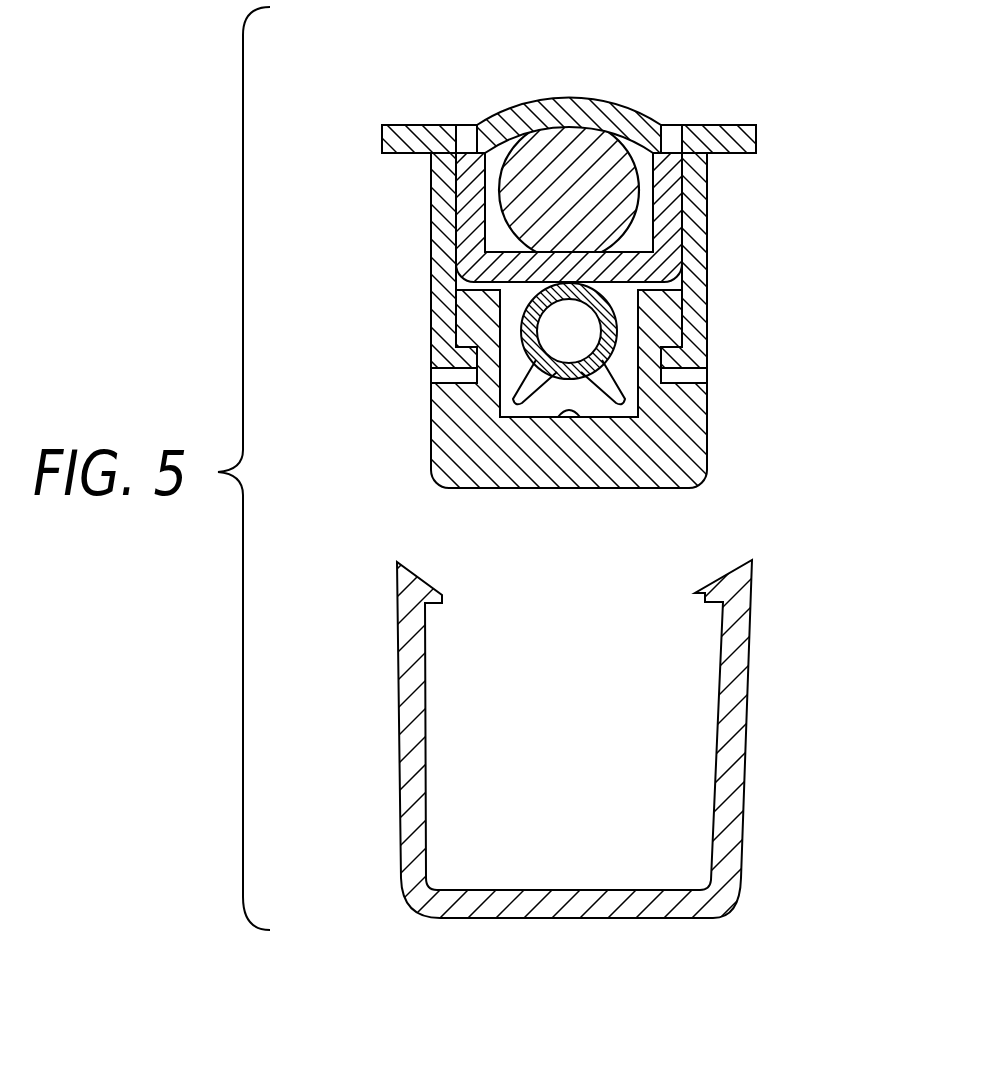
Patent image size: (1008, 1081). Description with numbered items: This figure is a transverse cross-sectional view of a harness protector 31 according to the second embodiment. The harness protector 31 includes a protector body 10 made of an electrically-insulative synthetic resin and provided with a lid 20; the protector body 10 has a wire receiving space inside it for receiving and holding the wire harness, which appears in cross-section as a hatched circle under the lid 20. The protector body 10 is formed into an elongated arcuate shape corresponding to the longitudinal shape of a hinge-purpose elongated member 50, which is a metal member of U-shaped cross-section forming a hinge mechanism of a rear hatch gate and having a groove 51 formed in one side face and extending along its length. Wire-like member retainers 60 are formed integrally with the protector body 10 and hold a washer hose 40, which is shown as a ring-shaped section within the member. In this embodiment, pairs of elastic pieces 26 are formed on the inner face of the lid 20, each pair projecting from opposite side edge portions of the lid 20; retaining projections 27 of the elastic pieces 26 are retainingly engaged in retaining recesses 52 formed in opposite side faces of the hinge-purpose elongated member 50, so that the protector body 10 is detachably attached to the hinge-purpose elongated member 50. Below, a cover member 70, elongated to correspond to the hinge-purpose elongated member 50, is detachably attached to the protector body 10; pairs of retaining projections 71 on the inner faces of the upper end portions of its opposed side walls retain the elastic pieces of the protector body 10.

The harness protector 31 is at (392, 104).
The lid 20 is at (513, 103).
The protector body 10 is at (446, 207).
The elastic pieces 26 is at (437, 278).
The retaining projections 27 is at (453, 364).
The washer hose 40 is at (614, 309).
The hinge-purpose elongated member 50 is at (730, 458).
The retaining recesses 52 is at (445, 395).
The wire-like member retainers 60 is at (513, 402).
The groove 51 is at (573, 412).
The cover member 70 is at (772, 742).
The retaining projections 71 is at (457, 600).